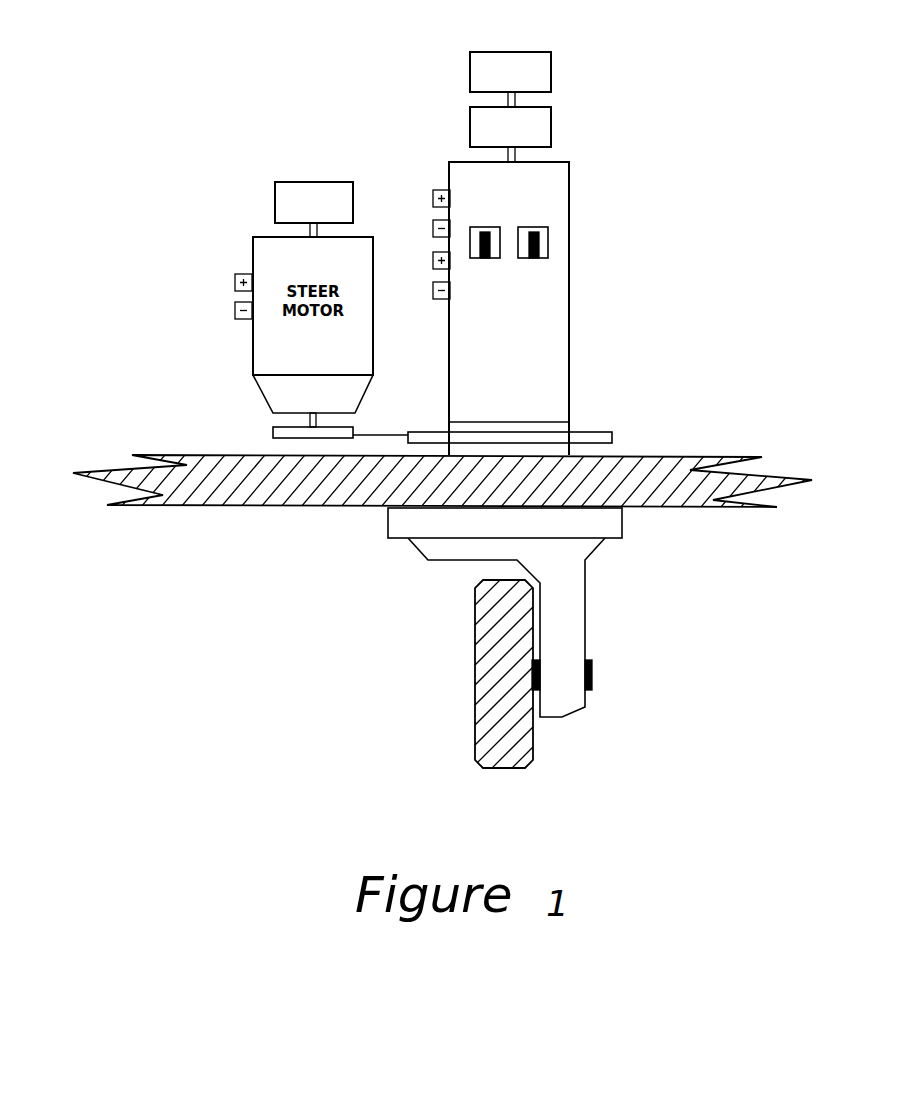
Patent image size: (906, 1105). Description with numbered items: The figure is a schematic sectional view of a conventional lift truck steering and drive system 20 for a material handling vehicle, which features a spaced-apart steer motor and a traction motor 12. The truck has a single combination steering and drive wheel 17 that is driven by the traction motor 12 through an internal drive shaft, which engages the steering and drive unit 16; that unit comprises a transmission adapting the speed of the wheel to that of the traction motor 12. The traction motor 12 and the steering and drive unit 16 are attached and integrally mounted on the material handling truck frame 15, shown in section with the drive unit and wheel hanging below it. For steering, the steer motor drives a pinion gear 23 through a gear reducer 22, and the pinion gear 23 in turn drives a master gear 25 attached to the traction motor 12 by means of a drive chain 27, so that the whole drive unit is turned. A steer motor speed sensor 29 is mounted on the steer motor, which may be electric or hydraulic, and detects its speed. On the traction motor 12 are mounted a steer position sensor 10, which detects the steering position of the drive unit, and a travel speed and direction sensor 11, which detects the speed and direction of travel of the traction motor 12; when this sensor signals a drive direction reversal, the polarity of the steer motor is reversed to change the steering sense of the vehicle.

The steer position sensor 10 is at (551, 77).
The travel speed and direction sensor 11 is at (551, 139).
The traction motor 12 is at (570, 305).
The material handling truck frame 15 is at (688, 468).
The steering and drive unit 16 is at (585, 623).
The steering and drive wheel 17 is at (475, 694).
The steering and drive system 20 is at (593, 210).
The gear reducer 22 is at (270, 404).
The pinion gear 23 is at (272, 434).
The master gear 25 is at (612, 432).
The drive chain 27 is at (370, 436).
The steer motor speed sensor 29 is at (288, 182).